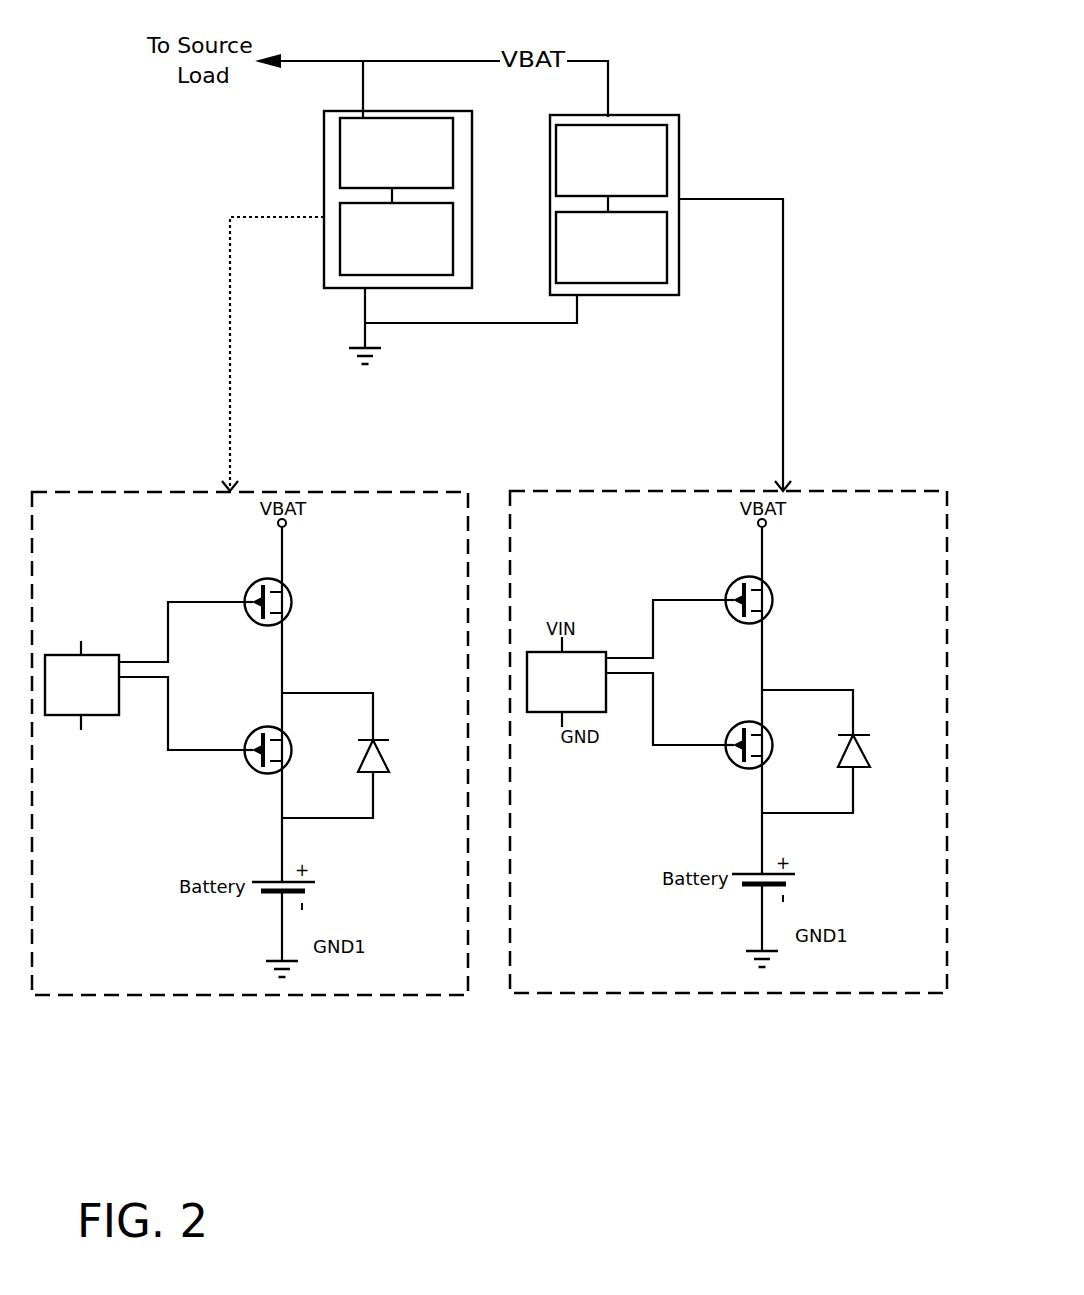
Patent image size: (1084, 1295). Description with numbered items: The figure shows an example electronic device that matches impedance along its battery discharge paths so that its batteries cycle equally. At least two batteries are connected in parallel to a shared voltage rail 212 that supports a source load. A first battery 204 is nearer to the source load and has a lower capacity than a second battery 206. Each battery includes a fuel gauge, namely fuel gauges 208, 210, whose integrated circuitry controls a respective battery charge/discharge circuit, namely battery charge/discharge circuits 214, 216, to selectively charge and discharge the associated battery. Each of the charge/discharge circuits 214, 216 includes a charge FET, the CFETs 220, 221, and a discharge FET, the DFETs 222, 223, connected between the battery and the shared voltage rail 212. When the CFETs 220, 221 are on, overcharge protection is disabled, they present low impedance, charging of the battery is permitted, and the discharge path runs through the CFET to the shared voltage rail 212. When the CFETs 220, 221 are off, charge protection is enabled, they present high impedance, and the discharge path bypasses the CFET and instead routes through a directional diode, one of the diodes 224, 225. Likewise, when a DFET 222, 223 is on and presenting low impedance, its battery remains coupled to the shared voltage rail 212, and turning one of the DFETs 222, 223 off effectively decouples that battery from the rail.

The first battery 204 is at (398, 199).
The second battery 206 is at (611, 247).
The fuel gauge 208 is at (112, 715).
The fuel gauge 210 is at (653, 157).
The shared voltage rail 212 is at (418, 61).
The battery charge/discharge circuit 214 is at (157, 493).
The battery charge/discharge circuit 216 is at (578, 491).
The charge FET (CFET) 220 is at (251, 766).
The charge FET (CFET) 221 is at (731, 762).
The discharge FET (DFET) 222 is at (252, 584).
The discharge FET (DFET) 223 is at (733, 582).
The directional diode 224 is at (377, 775).
The directional diode 225 is at (857, 770).